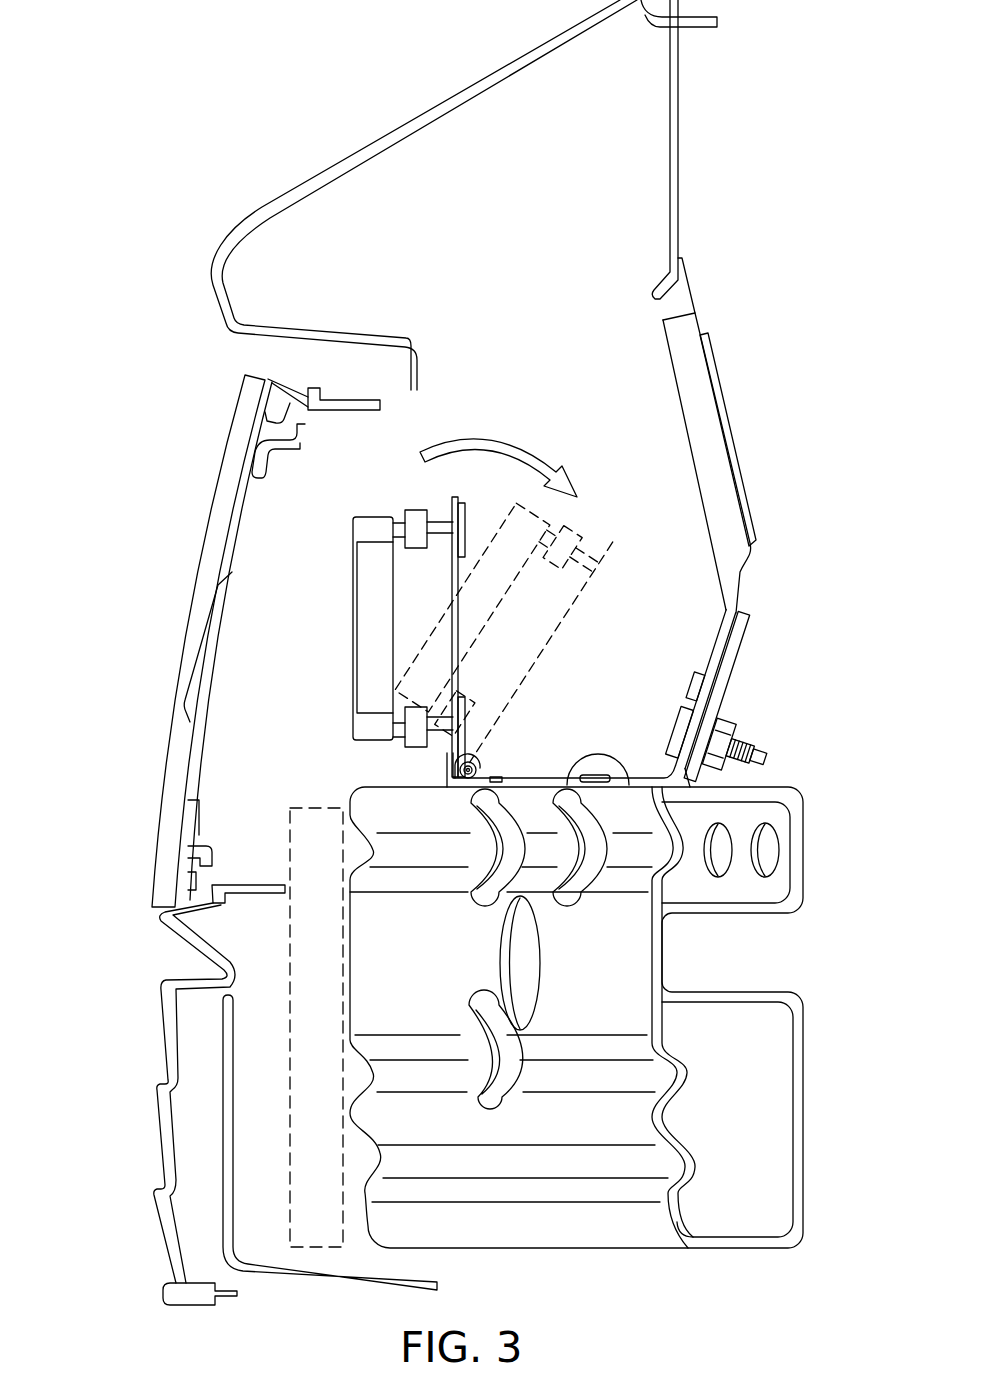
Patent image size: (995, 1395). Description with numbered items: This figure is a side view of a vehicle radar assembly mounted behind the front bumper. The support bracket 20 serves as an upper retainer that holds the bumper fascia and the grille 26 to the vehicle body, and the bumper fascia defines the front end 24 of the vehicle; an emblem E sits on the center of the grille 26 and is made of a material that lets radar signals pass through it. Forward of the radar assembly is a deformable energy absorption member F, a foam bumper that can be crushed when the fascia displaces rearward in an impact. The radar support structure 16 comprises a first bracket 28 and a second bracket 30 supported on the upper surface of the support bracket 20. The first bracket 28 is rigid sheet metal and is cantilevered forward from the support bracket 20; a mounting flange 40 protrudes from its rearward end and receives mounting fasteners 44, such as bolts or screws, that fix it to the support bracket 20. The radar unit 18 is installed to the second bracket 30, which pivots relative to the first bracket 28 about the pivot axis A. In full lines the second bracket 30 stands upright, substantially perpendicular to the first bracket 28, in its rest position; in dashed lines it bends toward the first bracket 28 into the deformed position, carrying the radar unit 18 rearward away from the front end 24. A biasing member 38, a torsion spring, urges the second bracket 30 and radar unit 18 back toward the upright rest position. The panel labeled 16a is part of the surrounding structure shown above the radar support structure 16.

The upper body panel 16a is at (430, 108).
The radar support structure 16 is at (324, 551).
The radar unit 18 is at (371, 517).
The support bracket 20 is at (380, 805).
The front end 24 is at (162, 1135).
The grille 26 is at (209, 510).
The first bracket 28 is at (737, 583).
The second bracket 30 is at (460, 640).
The biasing member 38 is at (478, 768).
The mounting flange 40 is at (733, 693).
The mounting fasteners 44 is at (746, 740).
The pivot axis A is at (457, 786).
The emblem E is at (193, 655).
The deformable energy absorption member F is at (288, 830).